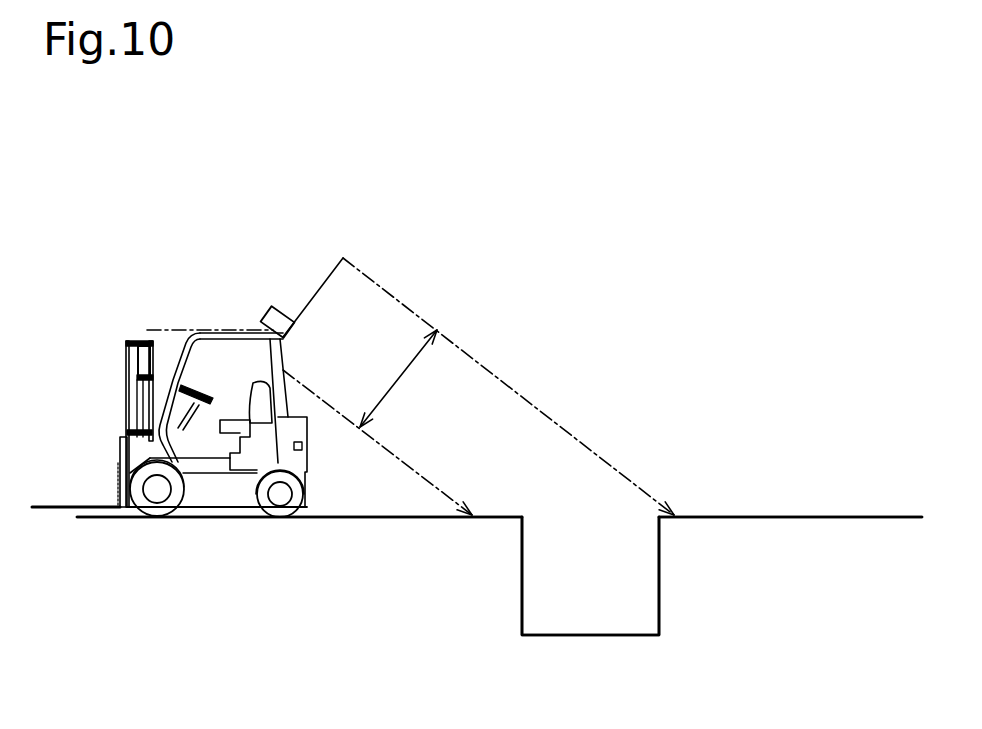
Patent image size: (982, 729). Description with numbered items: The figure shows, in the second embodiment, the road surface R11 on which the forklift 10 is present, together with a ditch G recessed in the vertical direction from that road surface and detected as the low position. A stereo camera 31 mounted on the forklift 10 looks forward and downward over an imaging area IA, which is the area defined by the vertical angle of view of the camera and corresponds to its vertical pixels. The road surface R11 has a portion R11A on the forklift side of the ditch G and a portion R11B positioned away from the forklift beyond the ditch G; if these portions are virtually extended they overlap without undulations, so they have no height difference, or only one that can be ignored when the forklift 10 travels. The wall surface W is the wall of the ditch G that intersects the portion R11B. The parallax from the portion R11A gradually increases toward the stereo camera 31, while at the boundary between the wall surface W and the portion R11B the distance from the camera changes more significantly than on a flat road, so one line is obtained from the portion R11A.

The forklift 10 is at (127, 340).
The stereo camera 31 is at (278, 307).
The imaging area IA is at (398, 378).
The road surface R11 is at (495, 515).
The portion of the road surface on the forklift side of the ditch R11A is at (350, 515).
The portion of the road surface beyond the ditch R11B is at (788, 515).
The ditch G is at (594, 607).
The wall surface W is at (659, 528).